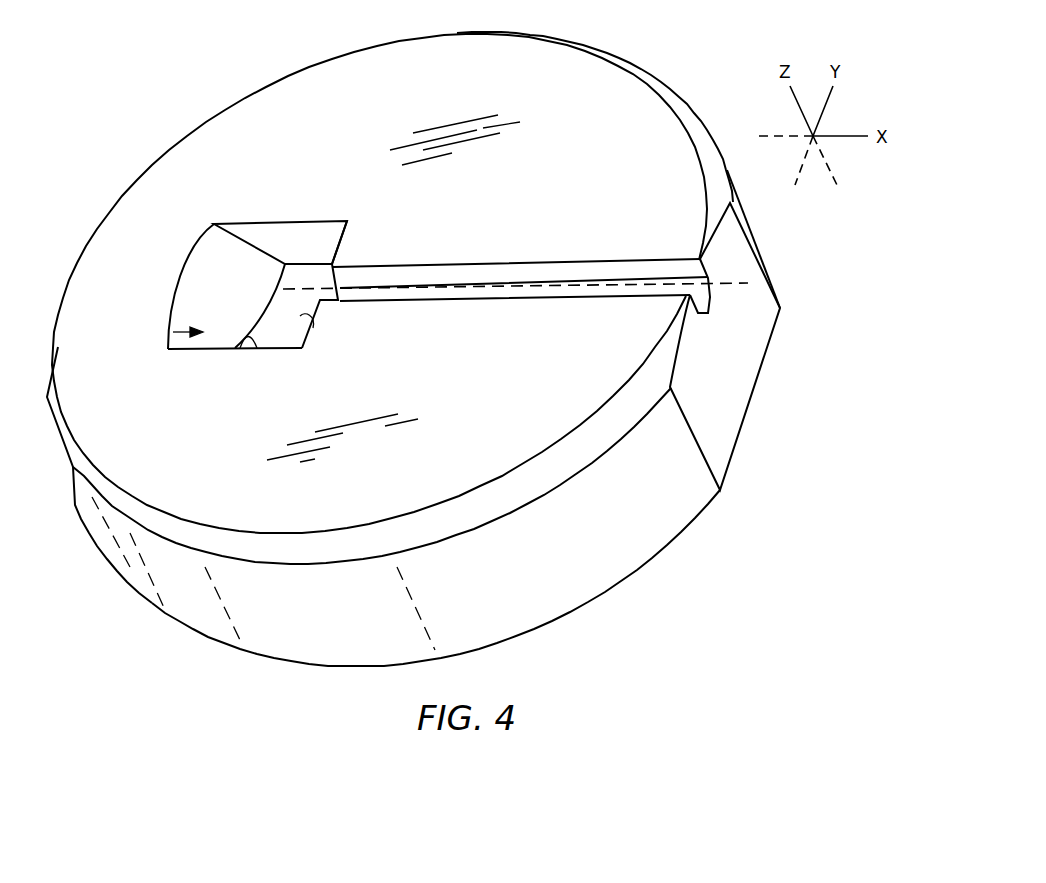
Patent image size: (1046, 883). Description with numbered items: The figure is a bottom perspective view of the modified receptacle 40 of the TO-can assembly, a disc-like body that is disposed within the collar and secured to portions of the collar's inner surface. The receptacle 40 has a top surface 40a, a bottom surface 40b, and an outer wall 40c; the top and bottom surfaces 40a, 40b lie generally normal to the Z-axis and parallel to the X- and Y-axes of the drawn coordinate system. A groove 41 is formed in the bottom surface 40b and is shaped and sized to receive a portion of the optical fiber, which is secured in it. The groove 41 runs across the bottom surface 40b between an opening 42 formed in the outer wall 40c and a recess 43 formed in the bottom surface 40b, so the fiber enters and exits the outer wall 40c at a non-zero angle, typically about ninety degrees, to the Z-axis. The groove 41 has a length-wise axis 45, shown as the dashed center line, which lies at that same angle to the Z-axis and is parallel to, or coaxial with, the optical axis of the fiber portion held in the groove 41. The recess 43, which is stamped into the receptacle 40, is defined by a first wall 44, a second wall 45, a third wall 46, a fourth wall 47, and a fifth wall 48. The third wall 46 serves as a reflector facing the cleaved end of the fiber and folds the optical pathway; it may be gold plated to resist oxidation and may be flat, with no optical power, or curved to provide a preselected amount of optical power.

The receptacle 40 is at (440, 362).
The top surface 40a is at (240, 653).
The bottom surface 40b is at (588, 88).
The outer wall 40c is at (487, 603).
The groove 41 is at (540, 268).
The opening 42 is at (710, 308).
The recess 43 is at (173, 333).
The first wall 44 is at (303, 317).
The second wall 45 is at (290, 233).
The third wall 46 is at (202, 283).
The fourth wall 47 is at (247, 334).
The fifth wall 48 is at (288, 335).